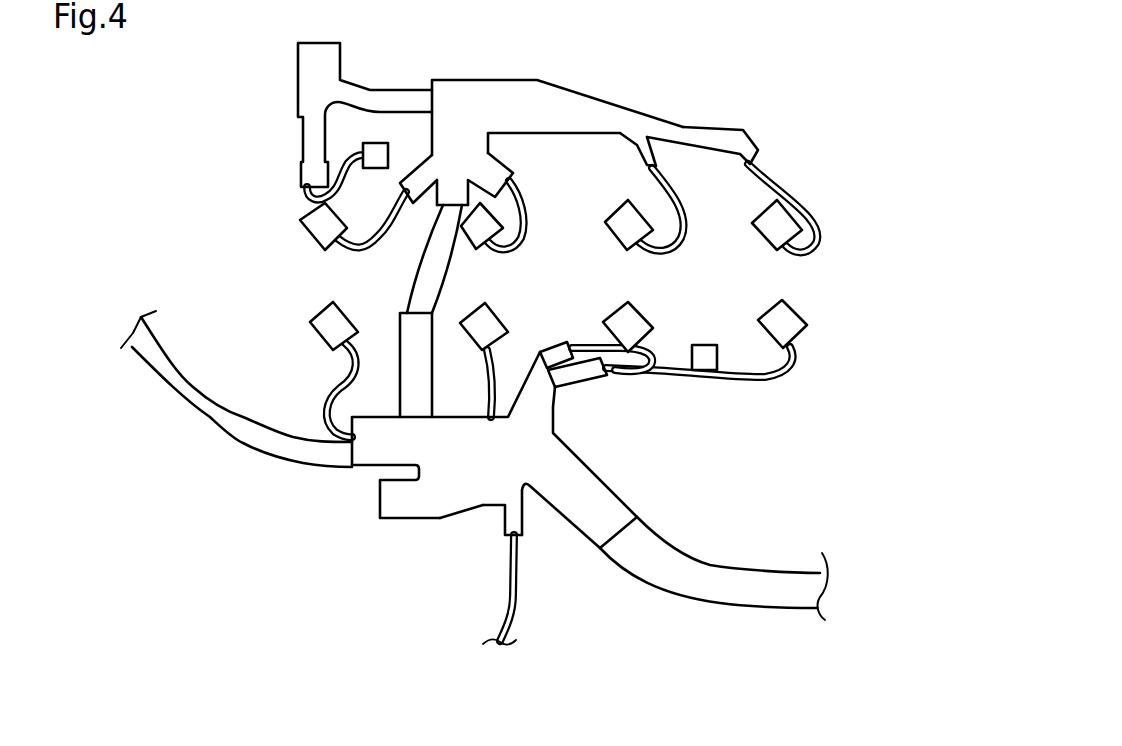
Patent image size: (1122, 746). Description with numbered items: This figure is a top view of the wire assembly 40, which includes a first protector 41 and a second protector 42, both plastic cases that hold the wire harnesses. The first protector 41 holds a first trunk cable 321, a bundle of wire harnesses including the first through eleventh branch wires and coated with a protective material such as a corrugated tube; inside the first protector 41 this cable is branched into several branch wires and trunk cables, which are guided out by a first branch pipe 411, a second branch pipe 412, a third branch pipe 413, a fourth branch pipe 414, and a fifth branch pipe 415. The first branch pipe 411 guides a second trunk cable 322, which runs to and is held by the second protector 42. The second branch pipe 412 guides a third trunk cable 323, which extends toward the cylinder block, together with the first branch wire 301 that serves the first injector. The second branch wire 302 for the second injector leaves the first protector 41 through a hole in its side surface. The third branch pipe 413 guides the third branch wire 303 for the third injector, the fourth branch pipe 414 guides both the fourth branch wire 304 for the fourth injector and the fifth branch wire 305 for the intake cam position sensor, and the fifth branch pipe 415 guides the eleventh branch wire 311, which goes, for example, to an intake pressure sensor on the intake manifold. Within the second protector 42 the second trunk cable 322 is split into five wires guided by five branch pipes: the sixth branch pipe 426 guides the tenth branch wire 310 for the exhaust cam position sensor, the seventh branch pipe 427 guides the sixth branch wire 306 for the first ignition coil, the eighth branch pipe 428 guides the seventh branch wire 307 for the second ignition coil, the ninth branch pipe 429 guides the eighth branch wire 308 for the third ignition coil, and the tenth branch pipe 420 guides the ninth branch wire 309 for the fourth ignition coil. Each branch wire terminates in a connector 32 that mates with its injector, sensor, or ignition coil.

The wire assembly 40 is at (763, 46).
The first protector 41 is at (597, 468).
The second protector 42 is at (590, 93).
The connector 32 is at (798, 312).
The first branch wire 301 is at (343, 367).
The second branch wire 302 is at (500, 360).
The third branch wire 303 is at (655, 340).
The fourth branch wire 304 is at (768, 380).
The fifth branch wire 305 is at (690, 370).
The sixth branch wire 306 is at (343, 252).
The seventh branch wire 307 is at (525, 205).
The eighth branch wire 308 is at (673, 187).
The ninth branch wire 309 is at (777, 180).
The tenth branch wire 310 is at (313, 193).
The eleventh branch wire 311 is at (520, 583).
The first trunk cable 321 is at (710, 565).
The second trunk cable 322 is at (407, 283).
The third trunk cable 323 is at (247, 453).
The first branch pipe 411 is at (400, 390).
The second branch pipe 412 is at (363, 470).
The third branch pipe 413 is at (553, 342).
The fourth branch pipe 414 is at (590, 388).
The fifth branch pipe 415 is at (505, 527).
The tenth branch pipe 420 is at (732, 127).
The sixth branch pipe 426 is at (300, 132).
The seventh branch pipe 427 is at (417, 163).
The eighth branch pipe 428 is at (507, 157).
The ninth branch pipe 429 is at (637, 157).